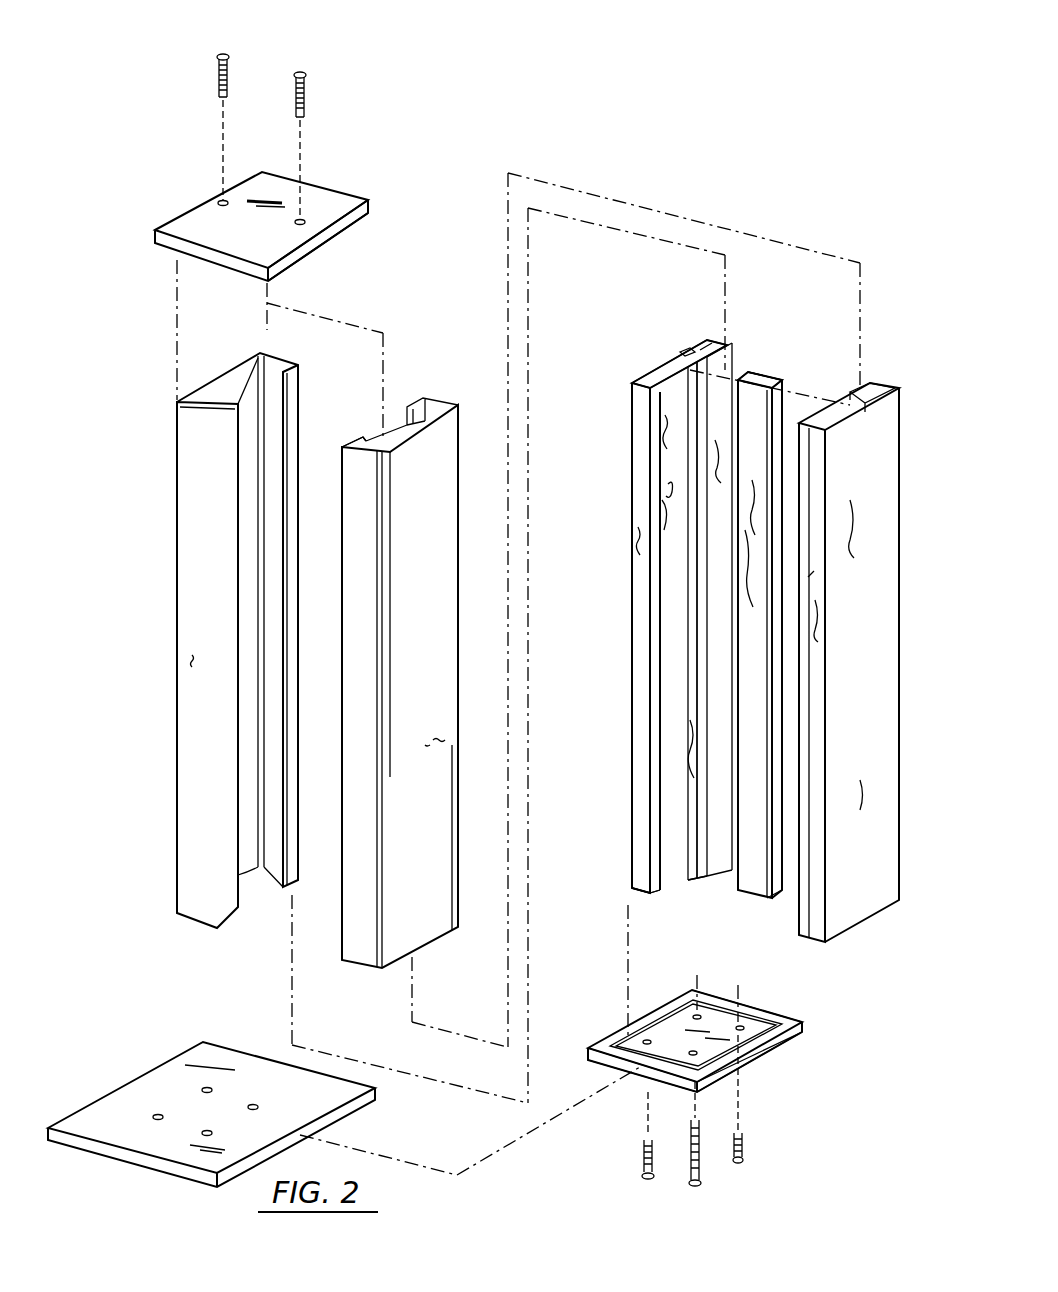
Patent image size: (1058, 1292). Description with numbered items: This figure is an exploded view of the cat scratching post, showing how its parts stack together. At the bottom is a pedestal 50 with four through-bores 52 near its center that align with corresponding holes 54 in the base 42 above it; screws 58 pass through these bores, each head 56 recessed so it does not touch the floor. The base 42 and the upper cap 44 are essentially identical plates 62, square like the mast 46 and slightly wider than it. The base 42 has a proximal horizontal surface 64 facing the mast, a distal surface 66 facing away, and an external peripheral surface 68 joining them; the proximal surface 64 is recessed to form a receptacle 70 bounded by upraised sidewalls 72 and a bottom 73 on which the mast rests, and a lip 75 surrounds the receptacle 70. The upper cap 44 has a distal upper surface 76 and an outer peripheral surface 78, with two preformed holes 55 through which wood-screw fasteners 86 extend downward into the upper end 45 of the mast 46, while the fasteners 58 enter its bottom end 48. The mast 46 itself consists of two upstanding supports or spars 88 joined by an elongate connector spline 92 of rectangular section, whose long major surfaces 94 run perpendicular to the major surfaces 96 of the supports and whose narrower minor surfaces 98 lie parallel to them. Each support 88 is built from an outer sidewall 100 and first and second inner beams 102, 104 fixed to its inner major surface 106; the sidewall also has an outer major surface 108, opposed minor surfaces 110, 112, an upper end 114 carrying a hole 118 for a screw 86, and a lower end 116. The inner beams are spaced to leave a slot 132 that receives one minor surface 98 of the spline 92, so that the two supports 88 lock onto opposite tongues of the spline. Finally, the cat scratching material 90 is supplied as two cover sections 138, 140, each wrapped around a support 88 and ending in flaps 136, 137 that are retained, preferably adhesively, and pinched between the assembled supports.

The base 42 is at (720, 1045).
The upper cap 44 is at (290, 209).
The upper end of mast 45 is at (744, 603).
The mast 46 is at (731, 603).
The bottom end of mast 48 is at (645, 904).
The pedestal 50 is at (211, 1103).
The through-bores 52 is at (206, 1131).
The holes 54 is at (693, 1051).
The preformed holes 55 is at (296, 222).
The screw head 56 is at (680, 1179).
The screws 58 is at (692, 1118).
The plate 62 is at (760, 1047).
The proximal horizontal surface 64 is at (640, 1070).
The distal surface 66 is at (677, 1087).
The external peripheral surface 68 is at (722, 1075).
The receptacle 70 is at (760, 1008).
The upraised sidewalls 72 is at (743, 1000).
The bottom of receptacle 73 is at (795, 1033).
The lip 75 is at (802, 1022).
The distal horizontal surface 76 is at (258, 200).
The outer peripheral surface 78 is at (340, 220).
The fasteners 86 is at (300, 73).
The supports 88 is at (626, 846).
The cat scratching material 90 is at (188, 662).
The connector spline 92 is at (753, 370).
The major surfaces of connector spline 94 is at (780, 611).
The major surfaces of supports 96 is at (672, 488).
The minor surfaces of connector spline 98 is at (747, 367).
The outer sidewall 100 is at (633, 768).
The first inner beam 102 is at (672, 893).
The second inner beam 104 is at (710, 353).
The inner major surface 106 is at (655, 628).
The outer major surface 108 is at (650, 600).
The minor surface 110 is at (708, 343).
The minor surface 112 is at (640, 448).
The upper end of sidewall 114 is at (638, 373).
The lower end of sidewall 116 is at (645, 895).
The hole 118 is at (687, 357).
The slot 132 is at (700, 400).
The flap 136 is at (230, 428).
The flap 137 is at (352, 437).
The cover section 138 is at (299, 640).
The cover section 140 is at (397, 664).